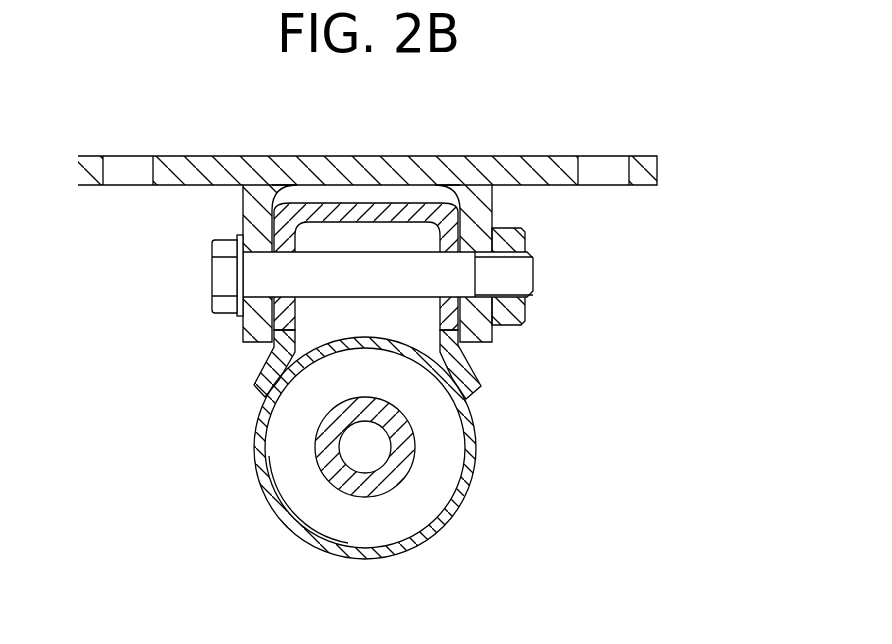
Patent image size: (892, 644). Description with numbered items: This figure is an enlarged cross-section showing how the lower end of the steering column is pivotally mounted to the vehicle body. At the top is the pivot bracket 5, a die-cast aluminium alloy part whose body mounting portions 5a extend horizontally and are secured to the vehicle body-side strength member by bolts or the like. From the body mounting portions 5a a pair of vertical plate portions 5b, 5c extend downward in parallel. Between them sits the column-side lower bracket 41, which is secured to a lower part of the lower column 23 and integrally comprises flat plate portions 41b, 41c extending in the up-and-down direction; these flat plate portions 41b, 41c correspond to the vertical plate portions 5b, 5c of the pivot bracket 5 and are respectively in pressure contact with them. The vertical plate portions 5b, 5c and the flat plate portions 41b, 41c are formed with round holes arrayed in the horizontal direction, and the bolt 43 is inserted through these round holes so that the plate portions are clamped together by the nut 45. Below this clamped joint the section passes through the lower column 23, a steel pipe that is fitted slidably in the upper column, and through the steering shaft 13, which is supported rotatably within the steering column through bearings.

The pivot bracket 5 is at (367, 215).
The body mounting portions 5a is at (248, 167).
The vertical plate portion 5b is at (249, 227).
The vertical plate portion 5c is at (494, 209).
The column-side lower bracket 41 is at (403, 301).
The flat plate portion 41b is at (273, 350).
The flat plate portion 41c is at (456, 350).
The bolt 43 is at (228, 275).
The nut 45 is at (517, 243).
The lower column 23 is at (262, 482).
The steering shaft 13 is at (415, 453).